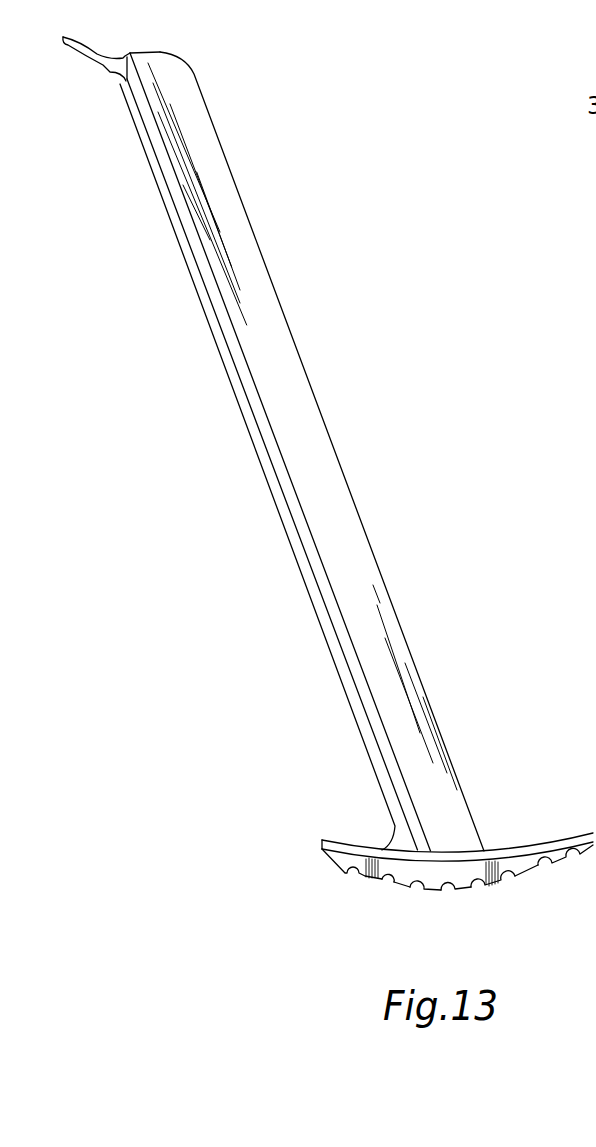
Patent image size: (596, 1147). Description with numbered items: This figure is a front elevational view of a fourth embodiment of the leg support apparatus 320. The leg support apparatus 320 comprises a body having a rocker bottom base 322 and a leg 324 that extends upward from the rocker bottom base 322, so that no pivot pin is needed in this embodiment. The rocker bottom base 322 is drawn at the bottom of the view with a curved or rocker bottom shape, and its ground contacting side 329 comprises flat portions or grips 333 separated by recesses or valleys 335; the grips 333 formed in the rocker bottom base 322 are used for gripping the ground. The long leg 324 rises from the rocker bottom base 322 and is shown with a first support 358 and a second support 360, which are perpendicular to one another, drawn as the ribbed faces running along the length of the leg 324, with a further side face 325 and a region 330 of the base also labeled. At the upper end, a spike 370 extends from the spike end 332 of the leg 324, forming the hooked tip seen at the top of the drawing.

The leg support apparatus 320 is at (298, 171).
The rocker bottom base 322 is at (513, 862).
The leg 324 is at (295, 420).
The shaft side surface 325 is at (360, 568).
The ground contacting side 329 is at (384, 880).
The head body face 330 is at (458, 873).
The spike end 332 is at (133, 53).
The grips 333 is at (428, 890).
The valleys 335 is at (538, 867).
The first support 358 is at (232, 360).
The second support 360 is at (223, 232).
The spike 370 is at (97, 63).